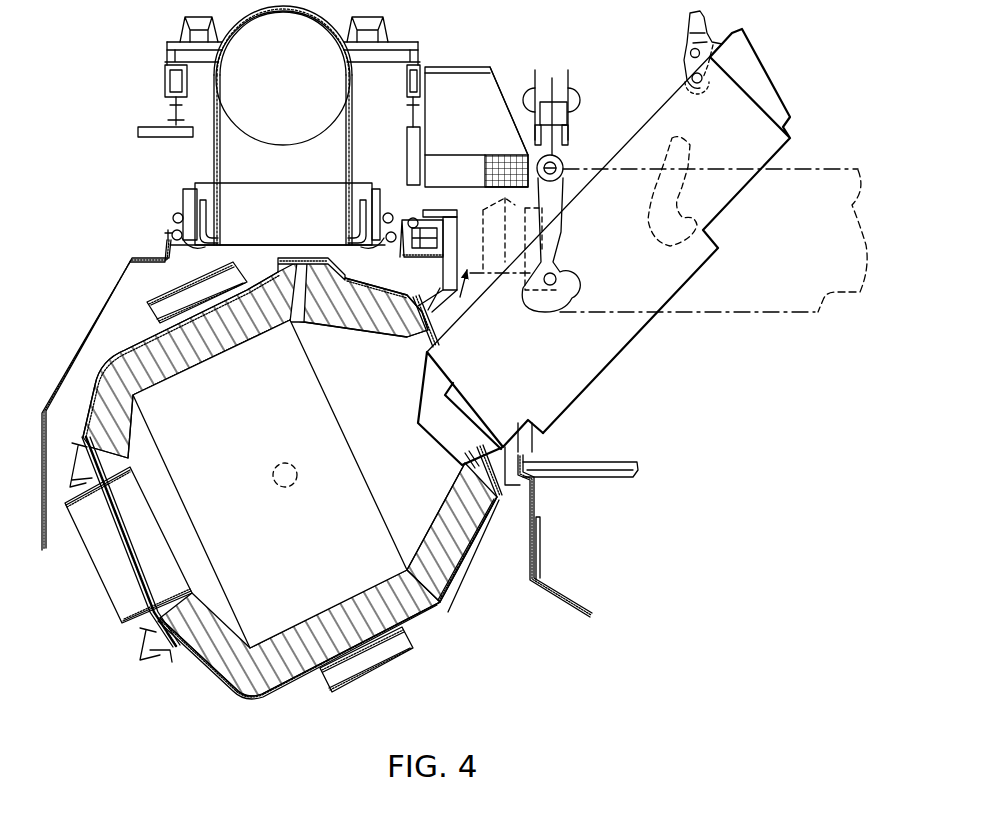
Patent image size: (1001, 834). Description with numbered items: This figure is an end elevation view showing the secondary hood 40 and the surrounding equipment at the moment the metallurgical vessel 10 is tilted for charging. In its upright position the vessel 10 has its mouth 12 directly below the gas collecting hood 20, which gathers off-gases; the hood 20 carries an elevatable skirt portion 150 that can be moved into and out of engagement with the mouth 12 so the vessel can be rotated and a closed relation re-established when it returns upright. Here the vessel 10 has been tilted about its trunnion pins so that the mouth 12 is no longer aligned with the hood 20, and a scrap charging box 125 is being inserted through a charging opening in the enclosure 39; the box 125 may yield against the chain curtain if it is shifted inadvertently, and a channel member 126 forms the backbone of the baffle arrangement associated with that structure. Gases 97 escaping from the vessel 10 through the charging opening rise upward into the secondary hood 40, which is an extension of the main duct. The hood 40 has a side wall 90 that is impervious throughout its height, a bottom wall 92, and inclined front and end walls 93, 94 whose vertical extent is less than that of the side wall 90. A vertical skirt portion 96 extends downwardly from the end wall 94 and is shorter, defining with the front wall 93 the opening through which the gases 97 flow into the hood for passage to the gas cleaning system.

The metallurgical vessel 10 is at (455, 625).
The mouth 12 is at (410, 343).
The gas collecting hood 20 is at (350, 147).
The enclosure 39 is at (457, 247).
The secondary hood 40 is at (505, 83).
The side wall 90 is at (427, 110).
The bottom wall 92 is at (432, 201).
The front wall 93 is at (510, 123).
The end wall 94 is at (477, 93).
The vertical skirt portion 96 is at (458, 163).
The gases 97 is at (500, 188).
The scrap charging box 125 is at (573, 383).
The channel member 126 is at (570, 283).
The elevatable skirt portion 150 is at (378, 200).